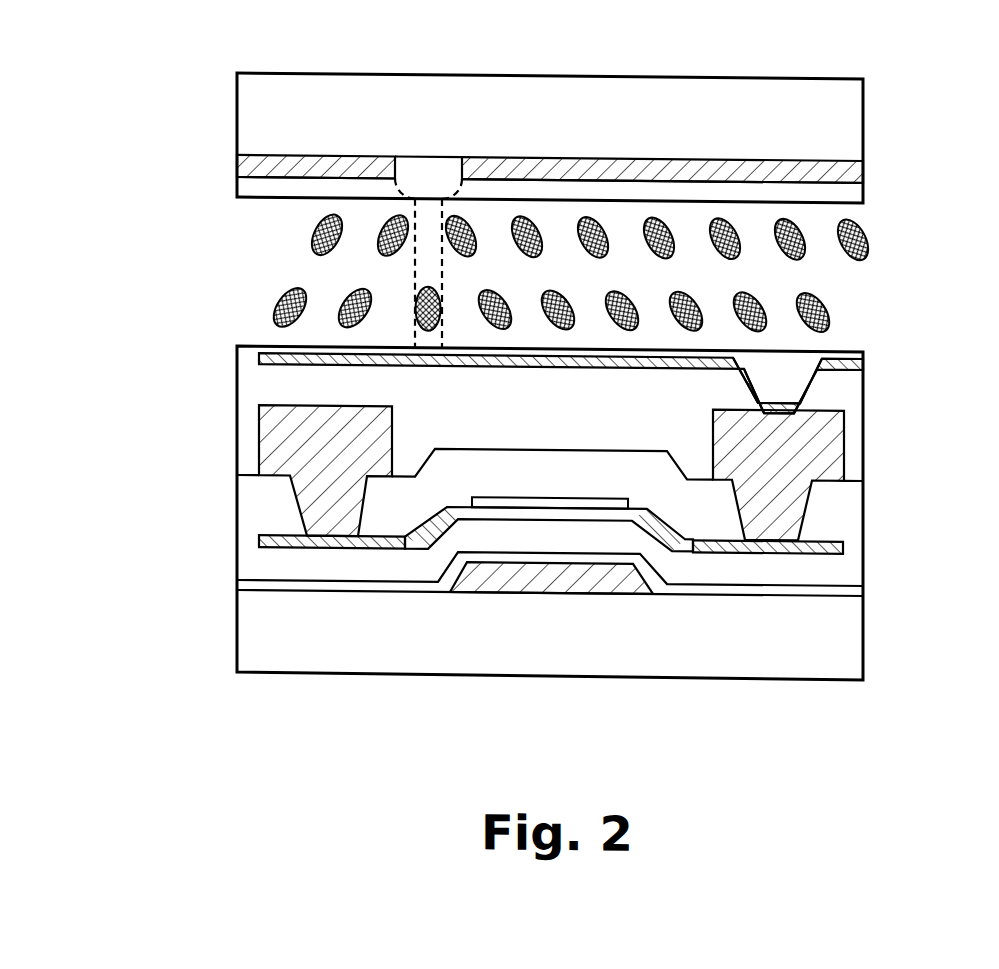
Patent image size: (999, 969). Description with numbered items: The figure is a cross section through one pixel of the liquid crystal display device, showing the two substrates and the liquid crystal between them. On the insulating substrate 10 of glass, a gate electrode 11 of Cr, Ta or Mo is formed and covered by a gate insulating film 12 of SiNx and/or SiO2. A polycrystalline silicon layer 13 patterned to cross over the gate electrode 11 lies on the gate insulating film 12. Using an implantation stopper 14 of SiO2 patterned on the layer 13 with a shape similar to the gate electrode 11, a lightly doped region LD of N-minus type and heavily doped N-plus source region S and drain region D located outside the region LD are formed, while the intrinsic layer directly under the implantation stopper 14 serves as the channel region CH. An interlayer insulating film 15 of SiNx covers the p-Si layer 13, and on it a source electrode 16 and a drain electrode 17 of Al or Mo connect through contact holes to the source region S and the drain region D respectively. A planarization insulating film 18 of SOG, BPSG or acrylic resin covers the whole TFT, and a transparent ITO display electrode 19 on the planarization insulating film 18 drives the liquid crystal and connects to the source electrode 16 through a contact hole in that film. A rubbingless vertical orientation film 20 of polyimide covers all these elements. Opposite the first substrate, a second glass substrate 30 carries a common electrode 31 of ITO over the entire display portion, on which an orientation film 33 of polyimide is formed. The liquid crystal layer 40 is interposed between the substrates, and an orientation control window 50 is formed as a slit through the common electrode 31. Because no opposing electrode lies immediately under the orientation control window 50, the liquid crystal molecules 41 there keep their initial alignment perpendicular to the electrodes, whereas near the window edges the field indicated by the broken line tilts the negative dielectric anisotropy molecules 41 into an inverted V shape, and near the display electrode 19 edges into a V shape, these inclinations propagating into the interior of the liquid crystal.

The insulating substrate 10 is at (840, 632).
The gate electrode 11 is at (550, 590).
The gate insulating film 12 is at (227, 547).
The polycrystalline silicon layer 13 is at (843, 540).
The implantation stopper 14 is at (482, 510).
The interlayer insulating film 15 is at (435, 468).
The source electrode 16 is at (813, 405).
The drain electrode 17 is at (270, 428).
The planarization insulating film 18 is at (265, 382).
The display electrode 19 is at (748, 347).
The vertical orientation film 20 is at (243, 355).
The second glass substrate 30 is at (250, 102).
The common electrode 31 is at (250, 167).
The orientation film 33 is at (250, 187).
The liquid crystal layer 40 is at (250, 275).
The liquid crystal molecule 41 is at (307, 238).
The orientation control window 50 is at (428, 163).
The channel region CH is at (483, 510).
The drain region D is at (263, 540).
The source region S is at (780, 550).
The lightly doped region LD is at (412, 550).